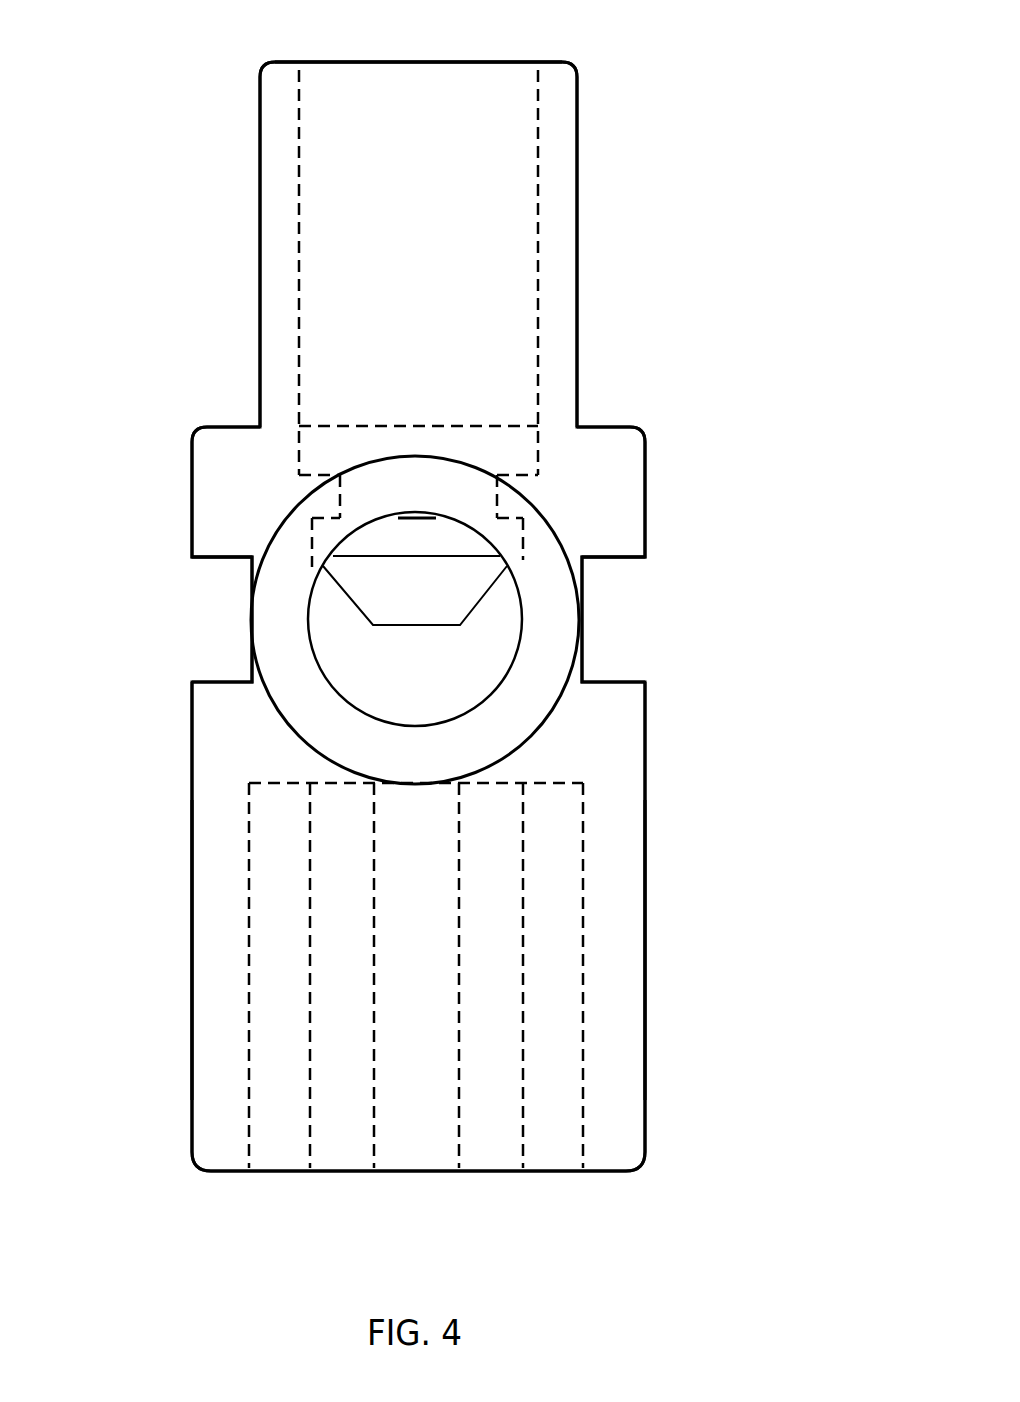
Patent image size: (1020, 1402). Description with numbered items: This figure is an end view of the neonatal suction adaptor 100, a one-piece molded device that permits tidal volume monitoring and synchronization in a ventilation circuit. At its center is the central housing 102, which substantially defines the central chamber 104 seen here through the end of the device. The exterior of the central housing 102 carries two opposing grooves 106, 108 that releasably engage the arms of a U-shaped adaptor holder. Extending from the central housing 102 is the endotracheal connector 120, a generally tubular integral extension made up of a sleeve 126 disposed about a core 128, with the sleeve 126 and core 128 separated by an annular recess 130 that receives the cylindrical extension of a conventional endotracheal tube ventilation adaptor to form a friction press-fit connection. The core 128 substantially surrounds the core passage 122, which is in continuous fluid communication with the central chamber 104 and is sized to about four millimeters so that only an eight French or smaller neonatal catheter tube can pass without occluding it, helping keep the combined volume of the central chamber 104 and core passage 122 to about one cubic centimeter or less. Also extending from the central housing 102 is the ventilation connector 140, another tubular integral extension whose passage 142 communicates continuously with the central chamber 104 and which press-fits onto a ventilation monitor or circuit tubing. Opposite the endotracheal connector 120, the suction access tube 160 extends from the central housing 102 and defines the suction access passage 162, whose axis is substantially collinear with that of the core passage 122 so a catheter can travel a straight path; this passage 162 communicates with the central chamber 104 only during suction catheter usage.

The neonatal suction adaptor 100 is at (644, 153).
The central housing 102 is at (615, 462).
The central chamber 104 is at (434, 685).
The groove 106 is at (603, 652).
The groove 108 is at (213, 608).
The endotracheal connector 120 is at (618, 787).
The core passage 122 is at (408, 1117).
The sleeve 126 is at (215, 927).
The core 128 is at (340, 1148).
The annular recess 130 is at (277, 1142).
The ventilation connector 140 is at (558, 618).
The passage 142 is at (340, 647).
The suction access tube 160 is at (560, 202).
The suction access passage 162 is at (478, 85).